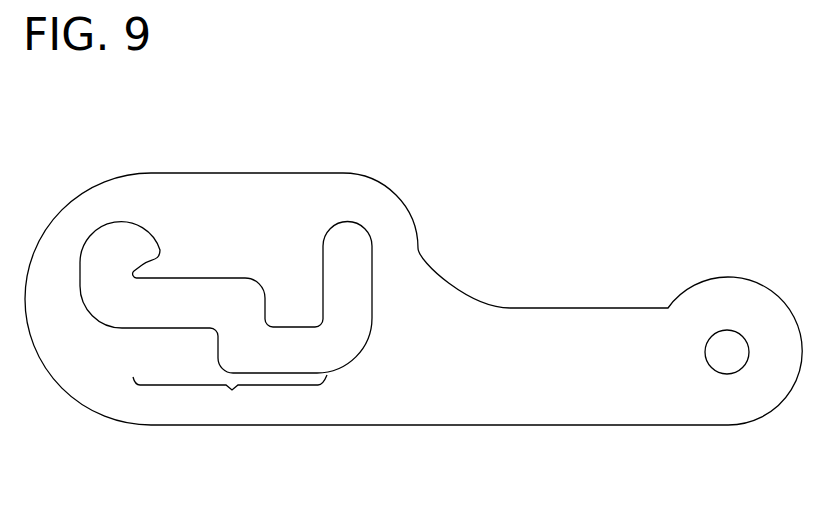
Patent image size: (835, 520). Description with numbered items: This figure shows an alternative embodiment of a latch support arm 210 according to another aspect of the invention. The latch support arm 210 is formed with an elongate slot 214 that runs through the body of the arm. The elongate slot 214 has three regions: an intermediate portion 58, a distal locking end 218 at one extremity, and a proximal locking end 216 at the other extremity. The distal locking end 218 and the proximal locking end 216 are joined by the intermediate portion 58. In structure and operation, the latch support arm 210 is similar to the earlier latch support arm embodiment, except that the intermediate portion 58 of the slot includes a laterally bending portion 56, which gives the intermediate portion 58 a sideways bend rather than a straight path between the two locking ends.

The latch support arm 210 is at (433, 426).
The distal locking end 218 is at (130, 220).
The proximal locking end 216 is at (320, 226).
The elongate slot 214 is at (183, 277).
The laterally bending portion 56 is at (262, 305).
The intermediate portion 58 is at (230, 396).